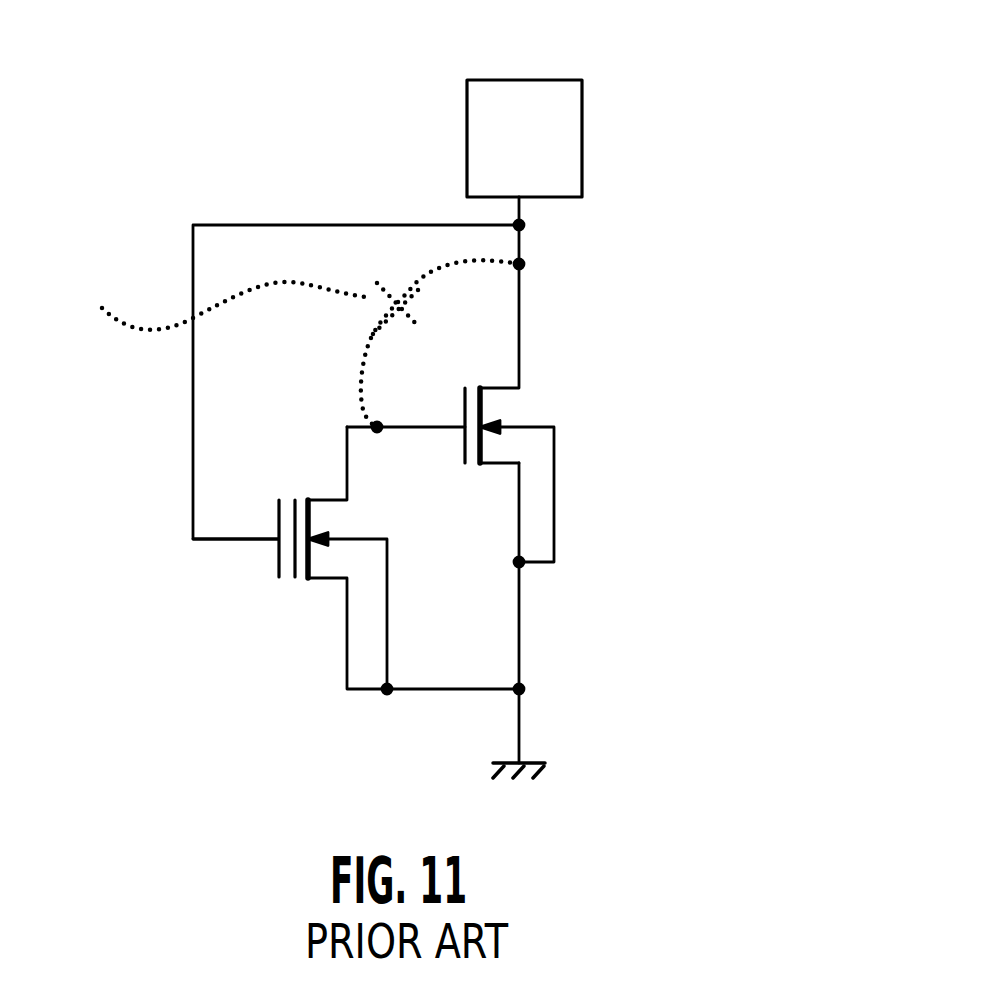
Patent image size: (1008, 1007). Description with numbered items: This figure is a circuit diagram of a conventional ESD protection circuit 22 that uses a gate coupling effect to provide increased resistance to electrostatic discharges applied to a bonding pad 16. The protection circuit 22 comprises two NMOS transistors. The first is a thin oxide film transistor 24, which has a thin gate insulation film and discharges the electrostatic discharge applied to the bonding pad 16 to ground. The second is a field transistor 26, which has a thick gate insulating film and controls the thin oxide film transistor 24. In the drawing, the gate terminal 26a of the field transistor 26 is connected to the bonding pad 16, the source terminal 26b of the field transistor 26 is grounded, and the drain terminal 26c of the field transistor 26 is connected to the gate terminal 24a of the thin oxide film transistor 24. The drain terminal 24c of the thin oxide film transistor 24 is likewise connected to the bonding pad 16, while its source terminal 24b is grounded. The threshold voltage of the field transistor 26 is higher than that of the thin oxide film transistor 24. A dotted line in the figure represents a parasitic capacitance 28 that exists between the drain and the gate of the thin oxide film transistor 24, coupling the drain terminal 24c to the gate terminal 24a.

The bonding pad 16 is at (562, 148).
The protection circuit 22 is at (728, 318).
The thin oxide film transistor 24 is at (522, 448).
The gate terminal of thin oxide film transistor 24a is at (435, 427).
The source terminal of thin oxide film transistor 24b is at (518, 518).
The drain terminal of thin oxide film transistor 24c is at (519, 358).
The field transistor 26 is at (317, 593).
The gate terminal of field transistor 26a is at (233, 539).
The source terminal of field transistor 26b is at (344, 648).
The drain terminal of field transistor 26c is at (345, 463).
The parasitic capacitance 28 is at (282, 343).